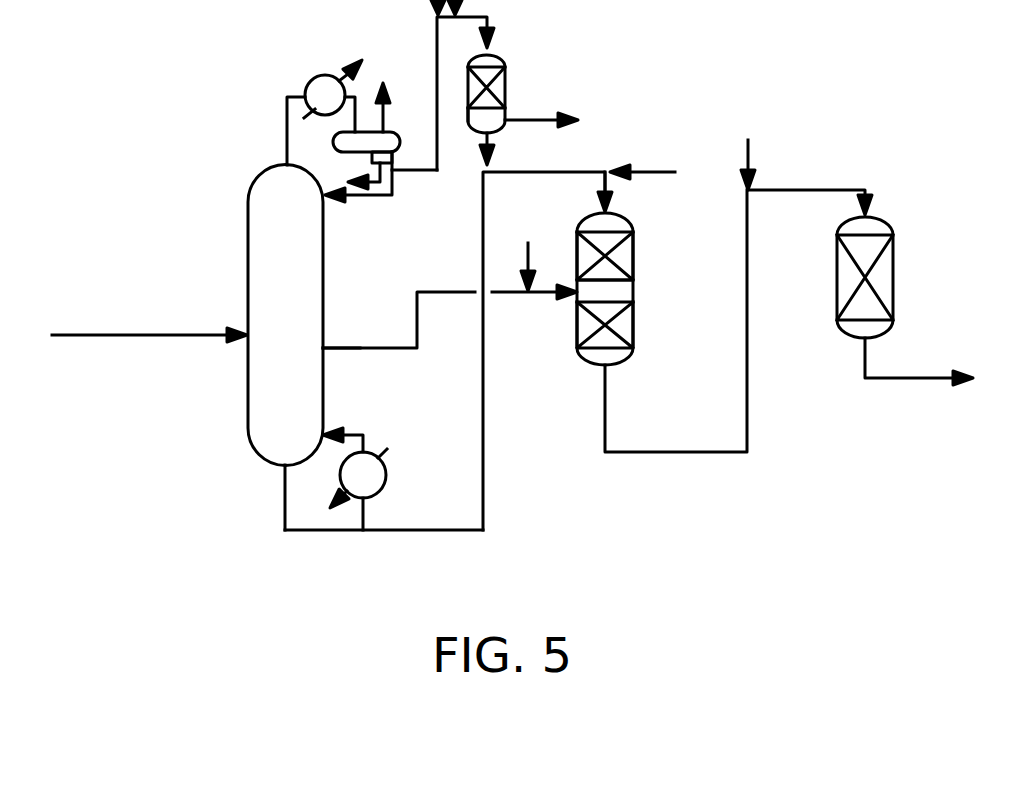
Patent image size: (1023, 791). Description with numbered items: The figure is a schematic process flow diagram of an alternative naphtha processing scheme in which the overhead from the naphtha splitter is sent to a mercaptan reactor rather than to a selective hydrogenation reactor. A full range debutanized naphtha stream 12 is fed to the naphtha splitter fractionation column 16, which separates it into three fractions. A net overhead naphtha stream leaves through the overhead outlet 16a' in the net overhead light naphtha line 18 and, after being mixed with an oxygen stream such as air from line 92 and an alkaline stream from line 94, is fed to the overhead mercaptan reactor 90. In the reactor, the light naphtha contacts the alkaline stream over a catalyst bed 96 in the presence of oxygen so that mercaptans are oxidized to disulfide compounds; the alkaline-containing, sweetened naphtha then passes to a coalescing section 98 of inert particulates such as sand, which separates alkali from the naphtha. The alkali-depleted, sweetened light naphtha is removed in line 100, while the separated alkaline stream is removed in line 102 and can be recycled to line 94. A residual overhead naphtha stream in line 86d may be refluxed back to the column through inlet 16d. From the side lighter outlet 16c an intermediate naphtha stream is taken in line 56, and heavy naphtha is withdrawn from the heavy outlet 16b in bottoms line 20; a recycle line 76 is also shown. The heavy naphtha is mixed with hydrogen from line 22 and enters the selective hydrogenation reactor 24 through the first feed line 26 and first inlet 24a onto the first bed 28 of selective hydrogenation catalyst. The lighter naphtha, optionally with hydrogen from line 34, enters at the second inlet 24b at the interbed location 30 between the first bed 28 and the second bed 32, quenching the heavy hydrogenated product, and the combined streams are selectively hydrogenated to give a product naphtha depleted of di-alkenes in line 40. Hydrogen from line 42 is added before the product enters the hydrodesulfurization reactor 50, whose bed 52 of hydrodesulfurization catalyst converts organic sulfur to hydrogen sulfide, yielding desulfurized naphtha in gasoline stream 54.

The debutanized naphtha stream 12 is at (155, 337).
The naphtha splitter fractionation column 16 is at (308, 328).
The overhead outlet 16a' is at (303, 124).
The heavy outlet 16b is at (285, 470).
The lighter outlet 16c is at (327, 343).
The inlet 16d is at (327, 199).
The net overhead light naphtha line 18 is at (436, 40).
The bottoms line 20 is at (432, 532).
The hydrogen line 22 is at (655, 172).
The selective hydrogenation reactor 24 is at (633, 226).
The first inlet 24a is at (607, 213).
The second inlet 24b is at (575, 295).
The first feed line 26 is at (600, 185).
The first bed 28 is at (633, 250).
The interbed location 30 is at (632, 292).
The second bed 32 is at (632, 322).
The hydrogen stream line 34 is at (525, 263).
The product naphtha line 40 is at (683, 453).
The hydrogen line 42 is at (749, 153).
The hydrodesulfurization reactor 50 is at (888, 225).
The bed of hydrodesulfurization catalyst 52 is at (895, 282).
The gasoline stream 54 is at (923, 380).
The intermediate naphtha line 56 is at (392, 350).
The recycle line 76 is at (547, 351).
The residual overhead naphtha line 86d is at (395, 184).
The overhead mercaptan reactor 90 is at (505, 62).
The oxygen stream line 92 is at (417, 11).
The alkaline stream line 94 is at (486, 10).
The catalyst bed 96 is at (503, 78).
The coalescing section 98 is at (503, 116).
The sweetened light naphtha line 100 is at (557, 113).
The separated alkaline line 102 is at (490, 140).